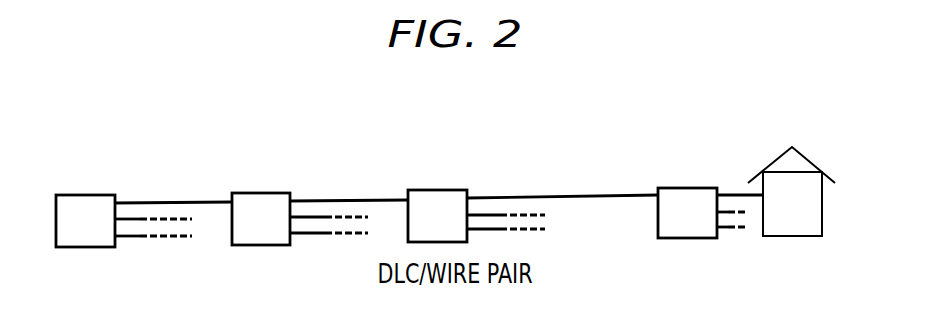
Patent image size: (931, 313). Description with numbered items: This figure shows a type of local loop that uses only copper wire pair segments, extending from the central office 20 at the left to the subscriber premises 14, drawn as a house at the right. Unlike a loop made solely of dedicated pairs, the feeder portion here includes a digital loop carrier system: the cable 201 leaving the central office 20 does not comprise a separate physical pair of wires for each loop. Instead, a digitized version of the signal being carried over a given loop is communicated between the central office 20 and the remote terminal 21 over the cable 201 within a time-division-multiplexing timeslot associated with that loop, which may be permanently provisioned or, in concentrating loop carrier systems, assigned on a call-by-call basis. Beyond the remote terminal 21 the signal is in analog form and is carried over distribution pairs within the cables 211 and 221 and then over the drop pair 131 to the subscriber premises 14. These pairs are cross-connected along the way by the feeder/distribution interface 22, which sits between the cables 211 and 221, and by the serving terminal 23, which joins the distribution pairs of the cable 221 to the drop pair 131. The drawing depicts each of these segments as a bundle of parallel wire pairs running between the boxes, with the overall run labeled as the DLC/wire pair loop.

The central office 20 is at (83, 195).
The cable 201 is at (182, 202).
The remote terminal 21 is at (255, 193).
The cable 211 is at (363, 198).
The feeder/distribution interface 22 is at (433, 190).
The cable 221 is at (500, 197).
The serving terminal 23 is at (694, 188).
The drop pair 131 is at (738, 193).
The subscriber premises 14 is at (813, 168).